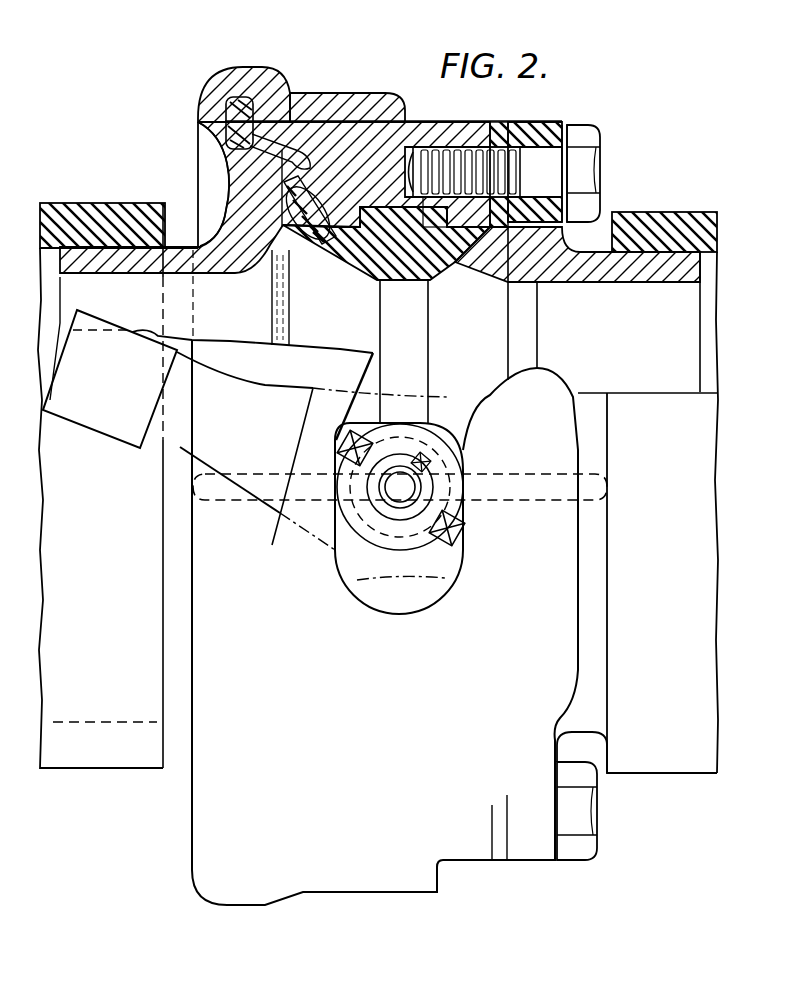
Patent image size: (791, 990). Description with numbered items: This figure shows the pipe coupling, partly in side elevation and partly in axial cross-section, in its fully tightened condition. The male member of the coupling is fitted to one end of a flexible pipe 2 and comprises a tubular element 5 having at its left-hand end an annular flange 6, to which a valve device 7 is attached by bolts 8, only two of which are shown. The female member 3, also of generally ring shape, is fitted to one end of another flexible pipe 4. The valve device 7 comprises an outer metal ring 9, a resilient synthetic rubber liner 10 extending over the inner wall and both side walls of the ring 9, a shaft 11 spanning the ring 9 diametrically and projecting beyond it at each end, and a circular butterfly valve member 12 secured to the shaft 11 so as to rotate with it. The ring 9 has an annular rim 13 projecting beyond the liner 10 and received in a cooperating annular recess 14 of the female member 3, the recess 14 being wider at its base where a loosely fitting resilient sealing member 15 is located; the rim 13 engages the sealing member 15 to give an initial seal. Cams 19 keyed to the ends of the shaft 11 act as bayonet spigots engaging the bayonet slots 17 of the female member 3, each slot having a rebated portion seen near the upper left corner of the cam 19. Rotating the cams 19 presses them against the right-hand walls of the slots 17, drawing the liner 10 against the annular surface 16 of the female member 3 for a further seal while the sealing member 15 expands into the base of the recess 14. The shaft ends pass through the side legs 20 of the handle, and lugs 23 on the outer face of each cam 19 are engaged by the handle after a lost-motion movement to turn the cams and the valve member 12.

The flexible pipe 2 is at (635, 212).
The female member 3 is at (198, 94).
The flexible pipe 4 is at (82, 203).
The tubular element 5 is at (622, 283).
The annular flange 6 is at (532, 122).
The valve device 7 is at (469, 123).
The bolts 8 is at (592, 162).
The outer metal ring 9 is at (428, 122).
The liner 10 is at (462, 253).
The shaft 11 is at (393, 520).
The butterfly valve member 12 is at (535, 503).
The annular rim 13 is at (277, 128).
The annular recess 14 is at (295, 109).
The annular resilient sealing member 15 is at (225, 120).
The annular surface 16 is at (328, 247).
The bayonet slots 17 is at (489, 383).
The cams 19 is at (410, 423).
The side legs 20 is at (117, 437).
The lugs 23 is at (362, 432).